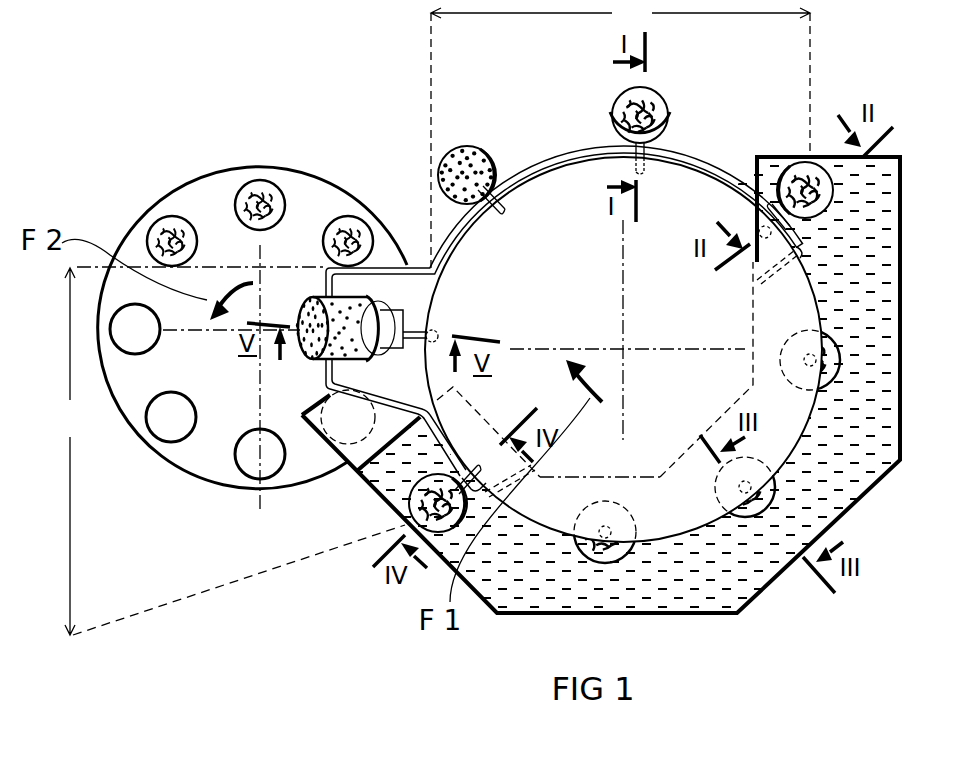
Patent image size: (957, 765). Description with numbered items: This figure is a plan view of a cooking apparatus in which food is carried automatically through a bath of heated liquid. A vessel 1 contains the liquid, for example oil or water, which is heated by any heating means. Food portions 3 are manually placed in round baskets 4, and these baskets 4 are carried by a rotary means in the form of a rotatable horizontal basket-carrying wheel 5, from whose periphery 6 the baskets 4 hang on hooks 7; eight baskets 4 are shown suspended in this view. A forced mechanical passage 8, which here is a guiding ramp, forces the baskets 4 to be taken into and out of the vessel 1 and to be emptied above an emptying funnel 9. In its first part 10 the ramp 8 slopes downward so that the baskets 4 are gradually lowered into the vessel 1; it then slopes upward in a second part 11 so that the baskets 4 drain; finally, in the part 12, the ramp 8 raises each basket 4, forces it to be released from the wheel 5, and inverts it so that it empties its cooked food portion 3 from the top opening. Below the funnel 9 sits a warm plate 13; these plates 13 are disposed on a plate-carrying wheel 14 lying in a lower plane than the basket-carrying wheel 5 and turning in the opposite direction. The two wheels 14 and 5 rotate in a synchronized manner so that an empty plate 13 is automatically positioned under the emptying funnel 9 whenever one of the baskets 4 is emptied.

The vessel 1 is at (884, 408).
The food portions 3 is at (660, 114).
The baskets 4 is at (670, 106).
The basket-carrying wheel 5 is at (800, 316).
The periphery 6 is at (808, 262).
The hooks 7 is at (650, 145).
The forced mechanical passage 8 is at (430, 447).
The emptying funnel 9 is at (419, 265).
The first part 10 is at (620, 134).
The second part 11 is at (228, 451).
The part 12 is at (323, 377).
The warm plate 13 is at (177, 222).
The plate-carrying wheel 14 is at (152, 222).